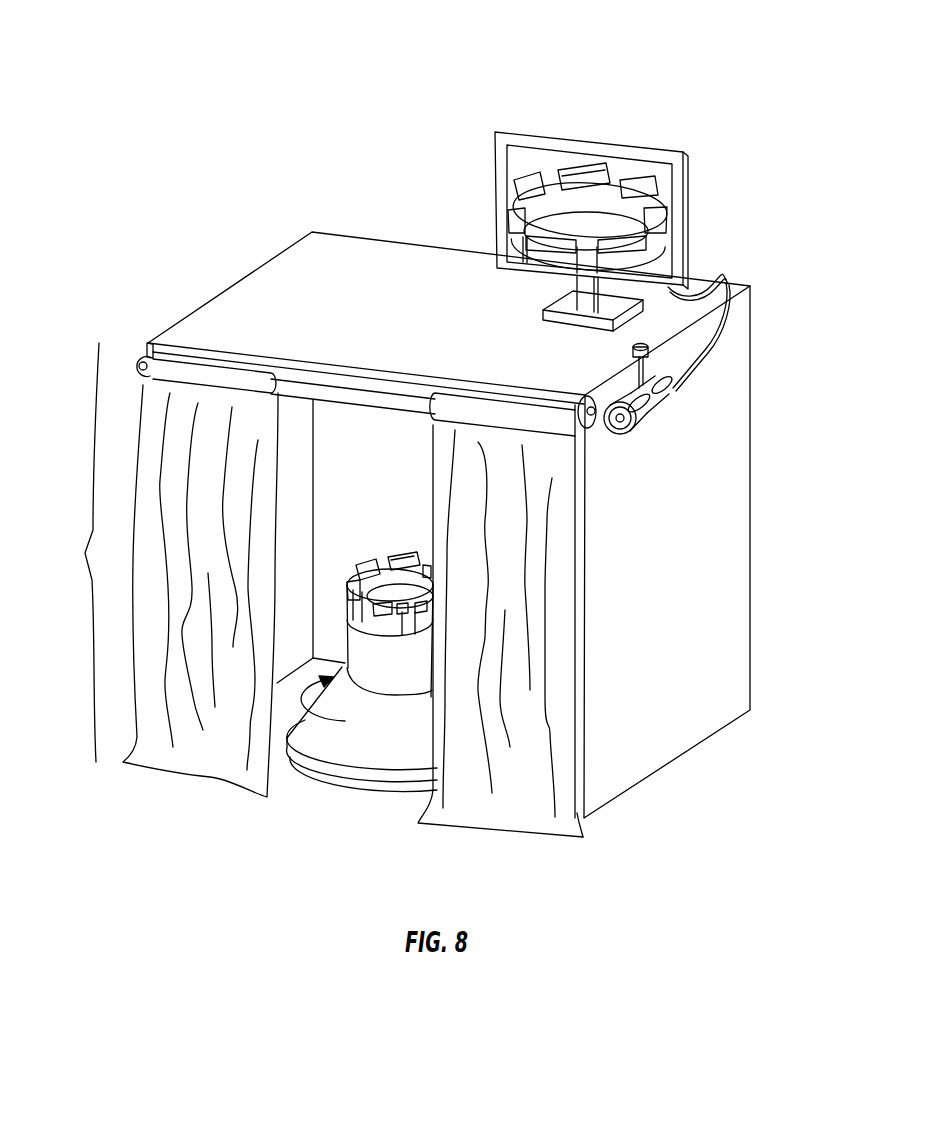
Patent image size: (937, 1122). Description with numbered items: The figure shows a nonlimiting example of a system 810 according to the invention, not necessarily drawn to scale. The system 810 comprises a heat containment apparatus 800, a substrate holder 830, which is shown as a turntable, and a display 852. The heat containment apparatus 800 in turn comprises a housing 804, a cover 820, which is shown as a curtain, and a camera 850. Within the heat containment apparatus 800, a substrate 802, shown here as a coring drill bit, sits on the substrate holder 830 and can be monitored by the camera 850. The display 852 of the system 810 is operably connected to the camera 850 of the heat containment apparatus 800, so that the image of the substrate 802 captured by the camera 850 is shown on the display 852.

The system 810 is at (156, 58).
The heat containment apparatus 800 is at (207, 279).
The substrate 802 is at (391, 556).
The housing 804 is at (157, 570).
The cover 820 is at (528, 826).
The substrate holder 830 is at (370, 781).
The camera 850 is at (660, 393).
The display 852 is at (507, 215).